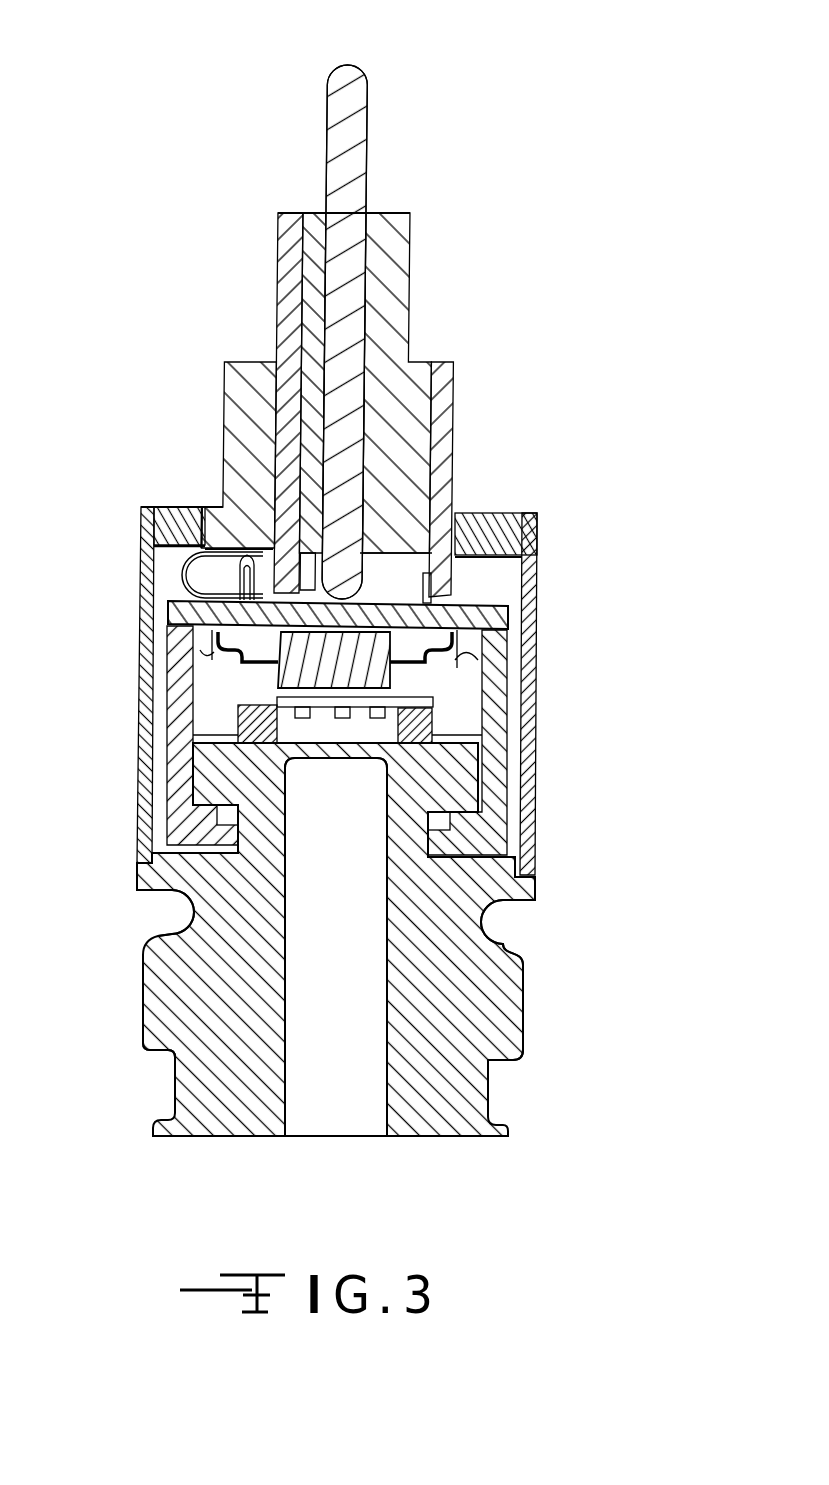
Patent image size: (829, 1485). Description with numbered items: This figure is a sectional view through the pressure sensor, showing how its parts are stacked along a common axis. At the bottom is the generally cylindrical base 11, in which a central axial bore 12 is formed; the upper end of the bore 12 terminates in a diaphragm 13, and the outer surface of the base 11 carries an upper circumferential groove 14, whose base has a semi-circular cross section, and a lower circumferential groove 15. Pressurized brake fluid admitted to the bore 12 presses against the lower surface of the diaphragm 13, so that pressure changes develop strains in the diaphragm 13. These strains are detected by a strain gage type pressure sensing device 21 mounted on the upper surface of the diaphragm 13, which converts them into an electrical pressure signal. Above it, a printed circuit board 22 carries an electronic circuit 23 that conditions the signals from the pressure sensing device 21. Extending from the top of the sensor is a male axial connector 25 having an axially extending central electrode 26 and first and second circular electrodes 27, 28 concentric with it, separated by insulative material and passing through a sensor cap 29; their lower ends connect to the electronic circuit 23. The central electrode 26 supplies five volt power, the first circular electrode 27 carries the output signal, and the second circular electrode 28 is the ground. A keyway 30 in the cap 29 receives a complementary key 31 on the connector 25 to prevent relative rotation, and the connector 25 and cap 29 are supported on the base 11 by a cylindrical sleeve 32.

The base 11 is at (510, 1000).
The central axial bore 12 is at (333, 1143).
The diaphragm 13 is at (321, 762).
The upper circumferential groove 14 is at (505, 923).
The lower circumferential groove 15 is at (500, 1087).
The pressure sensing device 21 is at (455, 707).
The printed circuit board 22 is at (167, 617).
The electronic circuit 23 is at (277, 690).
The male axial connector 25 is at (494, 258).
The central electrode 26 is at (346, 72).
The first circular electrode 27 is at (292, 220).
The second circular electrode 28 is at (441, 368).
The sensor cap 29 is at (492, 513).
The keyway 30 is at (204, 503).
The key 31 is at (221, 511).
The cylindrical sleeve 32 is at (150, 575).